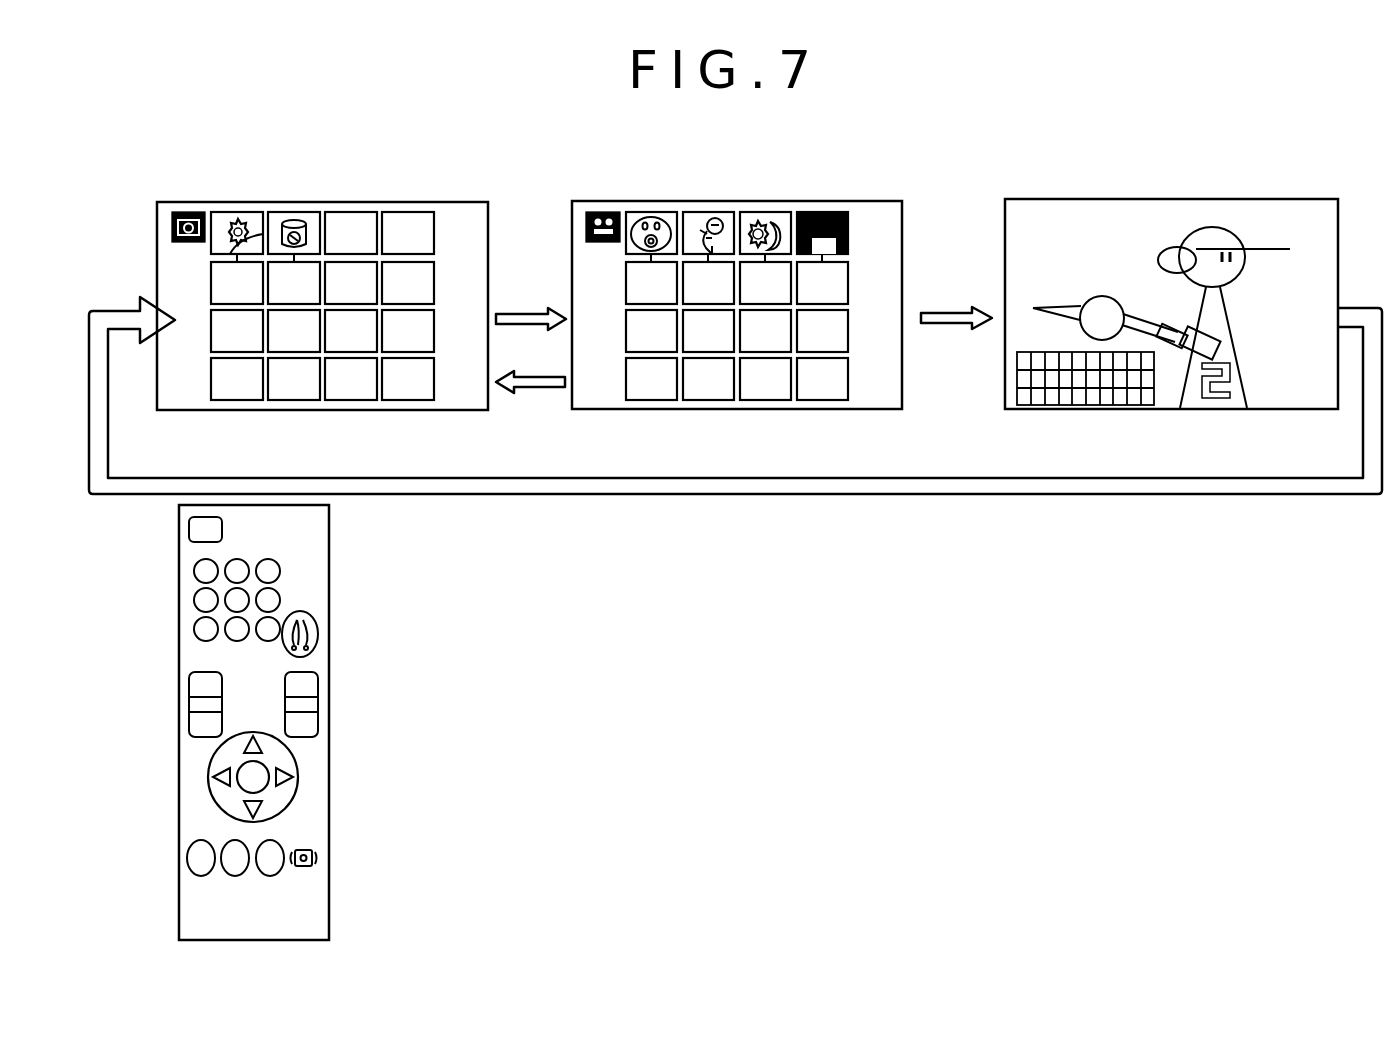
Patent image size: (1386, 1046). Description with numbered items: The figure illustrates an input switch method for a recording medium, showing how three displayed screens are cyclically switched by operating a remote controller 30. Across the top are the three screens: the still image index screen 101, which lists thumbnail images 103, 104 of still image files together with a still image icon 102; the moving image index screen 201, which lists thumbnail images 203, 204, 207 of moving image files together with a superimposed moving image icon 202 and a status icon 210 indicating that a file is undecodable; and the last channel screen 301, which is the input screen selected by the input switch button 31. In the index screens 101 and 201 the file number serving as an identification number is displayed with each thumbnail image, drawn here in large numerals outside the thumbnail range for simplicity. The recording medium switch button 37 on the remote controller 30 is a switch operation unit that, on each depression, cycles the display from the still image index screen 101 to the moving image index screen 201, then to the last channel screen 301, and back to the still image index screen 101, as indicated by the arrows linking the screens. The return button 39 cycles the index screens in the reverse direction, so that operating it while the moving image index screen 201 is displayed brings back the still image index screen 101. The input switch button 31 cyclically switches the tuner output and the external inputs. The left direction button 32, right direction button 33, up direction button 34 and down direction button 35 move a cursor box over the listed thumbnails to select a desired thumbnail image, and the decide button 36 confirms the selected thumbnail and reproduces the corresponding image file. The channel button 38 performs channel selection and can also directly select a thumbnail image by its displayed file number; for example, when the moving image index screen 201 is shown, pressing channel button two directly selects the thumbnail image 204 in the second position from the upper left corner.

The remote controller 30 is at (330, 928).
The input switch button 31 is at (187, 856).
The left direction button 32 is at (209, 768).
The right direction button 33 is at (291, 779).
The up direction button 34 is at (258, 741).
The down direction button 35 is at (262, 806).
The decide button 36 is at (262, 781).
The recording medium switch button 37 is at (318, 861).
The channel button 38 is at (281, 570).
The return button 39 is at (309, 617).
The still image index screen 101 is at (190, 410).
The still image icon 102 is at (188, 212).
The thumbnail image 103 is at (246, 212).
The thumbnail image 104 is at (303, 212).
The moving image index screen 201 is at (605, 409).
The moving image icon 202 is at (601, 212).
The thumbnail image 203 is at (659, 212).
The thumbnail image 204 is at (716, 212).
The thumbnail image 207 is at (773, 212).
The icon of undecodable 210 is at (830, 212).
The last channel screen 301 is at (1037, 409).